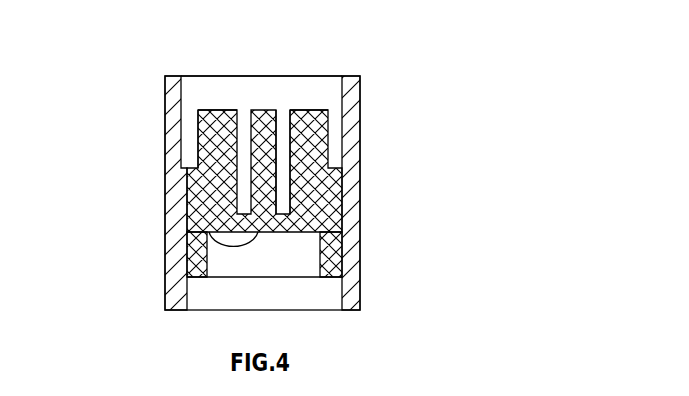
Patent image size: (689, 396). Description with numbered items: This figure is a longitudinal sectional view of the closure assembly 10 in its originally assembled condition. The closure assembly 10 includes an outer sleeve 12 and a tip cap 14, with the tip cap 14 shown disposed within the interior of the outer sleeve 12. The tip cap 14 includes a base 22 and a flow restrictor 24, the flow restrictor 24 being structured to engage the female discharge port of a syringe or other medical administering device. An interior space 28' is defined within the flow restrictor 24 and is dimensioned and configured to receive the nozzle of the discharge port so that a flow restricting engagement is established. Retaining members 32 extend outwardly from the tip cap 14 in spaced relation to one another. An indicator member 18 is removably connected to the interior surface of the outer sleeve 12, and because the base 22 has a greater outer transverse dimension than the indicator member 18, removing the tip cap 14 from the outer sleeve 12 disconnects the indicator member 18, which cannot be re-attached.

The closure assembly 10 is at (400, 112).
The outer sleeve 12 is at (360, 215).
The tip cap 14 is at (304, 190).
The indicator member 18 is at (200, 140).
The base 22 is at (322, 249).
The flow restrictor 24 is at (296, 92).
The interior space 28' is at (281, 111).
The retaining member 32 is at (222, 140).